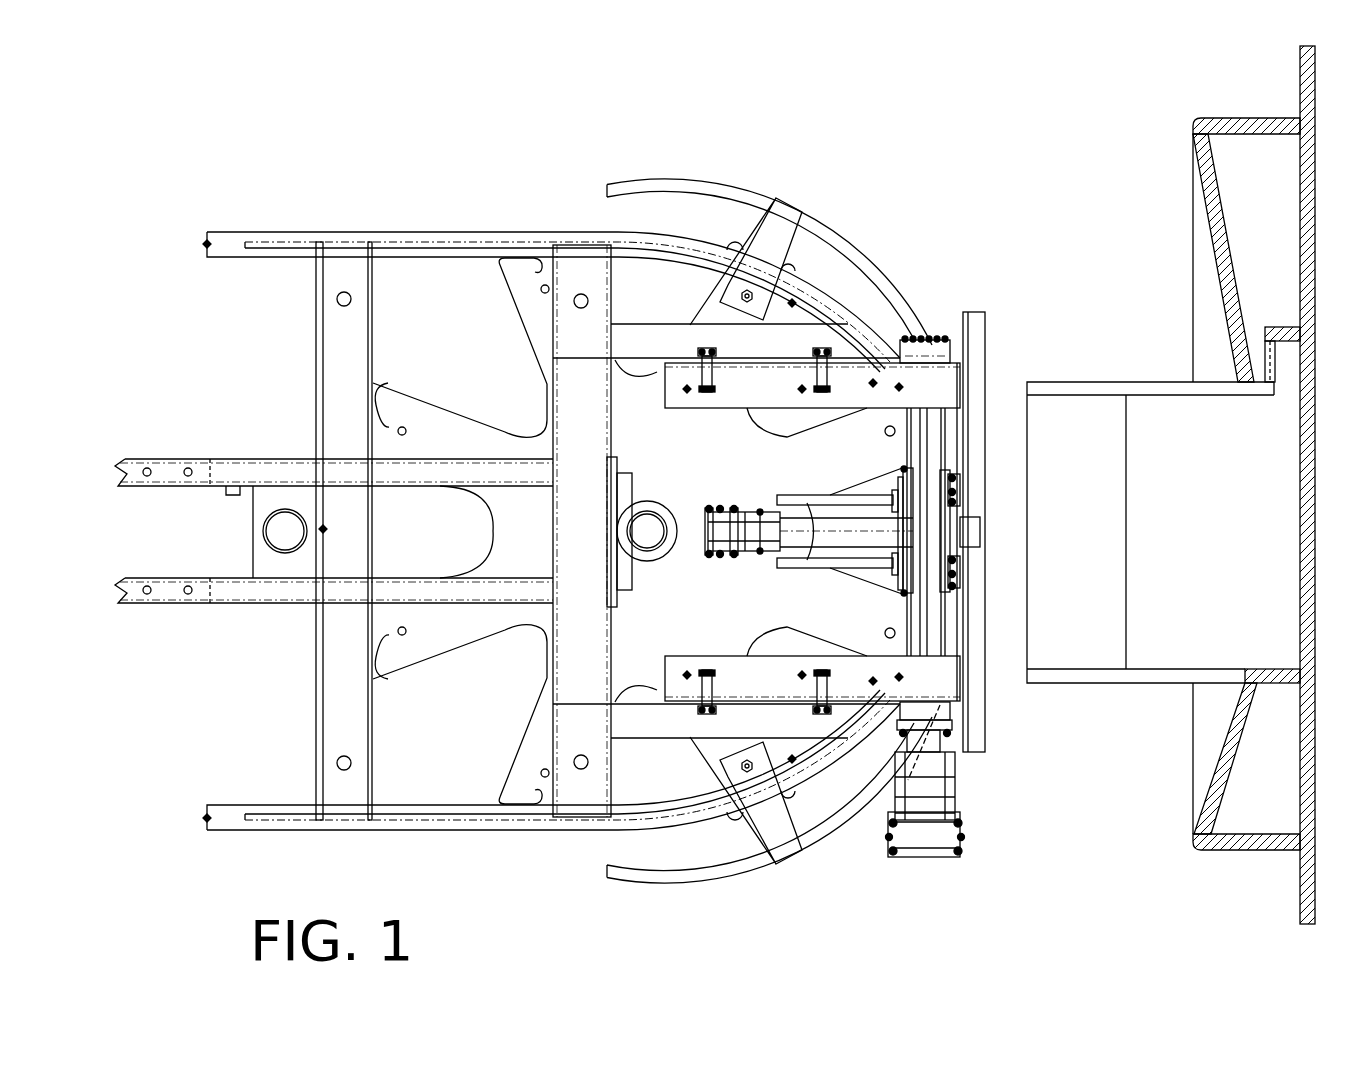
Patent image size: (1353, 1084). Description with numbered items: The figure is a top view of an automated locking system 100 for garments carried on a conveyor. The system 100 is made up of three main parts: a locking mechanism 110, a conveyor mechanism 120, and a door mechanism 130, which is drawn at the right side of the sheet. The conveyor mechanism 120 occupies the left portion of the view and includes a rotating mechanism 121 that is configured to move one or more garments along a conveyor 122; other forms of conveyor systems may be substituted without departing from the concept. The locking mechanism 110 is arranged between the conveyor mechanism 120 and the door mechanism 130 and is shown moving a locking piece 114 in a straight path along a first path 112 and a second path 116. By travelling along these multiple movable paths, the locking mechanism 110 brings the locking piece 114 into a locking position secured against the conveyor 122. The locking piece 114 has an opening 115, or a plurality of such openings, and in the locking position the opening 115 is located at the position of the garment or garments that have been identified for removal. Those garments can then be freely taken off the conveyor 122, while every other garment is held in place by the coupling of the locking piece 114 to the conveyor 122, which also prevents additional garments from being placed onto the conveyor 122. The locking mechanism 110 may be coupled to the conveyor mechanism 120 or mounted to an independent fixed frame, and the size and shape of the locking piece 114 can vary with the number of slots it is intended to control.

The system 100 is at (840, 105).
The locking mechanism 110 is at (960, 840).
The first path 112 is at (952, 357).
The locking piece 114 is at (975, 321).
The opening 115 is at (973, 529).
The second path 116 is at (797, 537).
The conveyor mechanism 120 is at (316, 668).
The rotating mechanism 121 is at (418, 410).
The conveyor 122 is at (207, 255).
The door mechanism 130 is at (1300, 433).